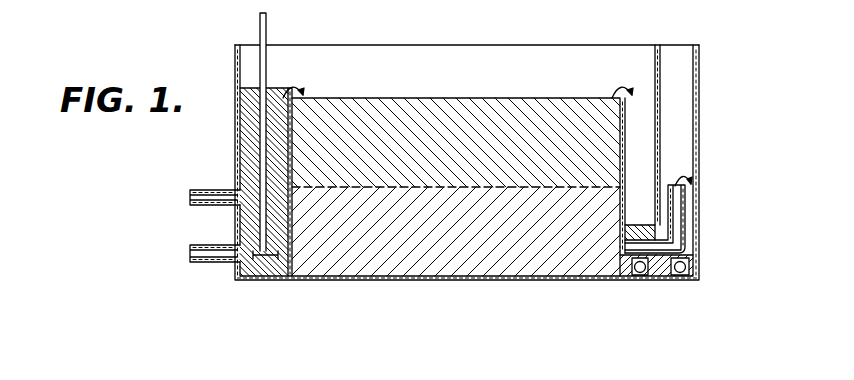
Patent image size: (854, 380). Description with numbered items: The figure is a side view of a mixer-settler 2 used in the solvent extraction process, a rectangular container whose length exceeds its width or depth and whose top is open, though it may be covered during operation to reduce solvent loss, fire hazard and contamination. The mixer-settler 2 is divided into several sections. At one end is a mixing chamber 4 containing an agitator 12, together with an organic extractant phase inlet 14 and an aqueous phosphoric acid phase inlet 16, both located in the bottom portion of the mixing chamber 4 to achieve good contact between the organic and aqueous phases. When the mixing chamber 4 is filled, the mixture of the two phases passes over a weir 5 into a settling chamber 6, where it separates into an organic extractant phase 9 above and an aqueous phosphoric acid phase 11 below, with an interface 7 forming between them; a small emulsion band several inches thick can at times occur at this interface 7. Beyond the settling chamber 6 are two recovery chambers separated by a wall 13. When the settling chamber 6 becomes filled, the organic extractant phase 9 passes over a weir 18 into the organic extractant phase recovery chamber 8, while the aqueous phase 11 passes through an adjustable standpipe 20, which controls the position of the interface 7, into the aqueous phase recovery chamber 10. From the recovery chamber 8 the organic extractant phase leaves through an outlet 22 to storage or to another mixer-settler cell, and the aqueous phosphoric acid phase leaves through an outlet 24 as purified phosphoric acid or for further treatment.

The mixer-settler 2 is at (542, 282).
The mixing chamber 4 is at (244, 151).
The weir 5 is at (293, 124).
The settling chamber 6 is at (473, 75).
The interface 7 is at (458, 190).
The organic extractant phase recovery chamber 8 is at (637, 151).
The organic extractant phase 9 is at (507, 115).
The aqueous phase recovery chamber 10 is at (680, 163).
The aqueous phosphoric acid phase 11 is at (409, 252).
The agitator 12 is at (259, 21).
The wall 13 is at (661, 62).
The organic extractant phase inlet 14 is at (210, 207).
The aqueous phosphoric acid phase inlet 16 is at (218, 264).
The weir 18 is at (624, 135).
The adjustable standpipe 20 is at (684, 236).
The outlet 22 is at (637, 281).
The outlet 24 is at (684, 281).